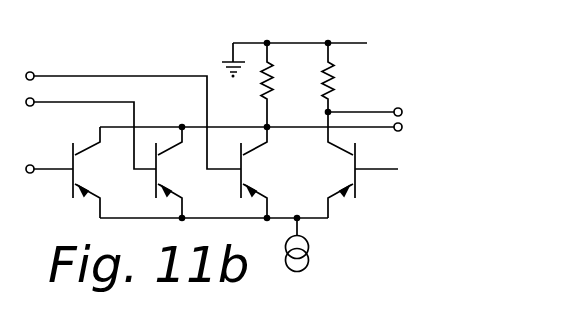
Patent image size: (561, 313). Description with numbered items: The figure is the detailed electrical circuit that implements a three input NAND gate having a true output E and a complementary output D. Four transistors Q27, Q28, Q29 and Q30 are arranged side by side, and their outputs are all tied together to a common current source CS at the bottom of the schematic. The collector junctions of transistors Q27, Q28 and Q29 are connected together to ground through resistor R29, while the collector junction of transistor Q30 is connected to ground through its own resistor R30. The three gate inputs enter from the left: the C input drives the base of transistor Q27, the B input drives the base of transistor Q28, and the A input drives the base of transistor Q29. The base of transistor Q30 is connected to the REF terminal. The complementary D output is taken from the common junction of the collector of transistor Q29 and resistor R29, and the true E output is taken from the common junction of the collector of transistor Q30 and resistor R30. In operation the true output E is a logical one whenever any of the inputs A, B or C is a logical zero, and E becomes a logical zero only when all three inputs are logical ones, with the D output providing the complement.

The transistor Q27 is at (92, 172).
The transistor Q28 is at (175, 172).
The transistor Q29 is at (260, 172).
The transistor Q30 is at (334, 172).
The resistor R29 is at (283, 85).
The resistor R30 is at (345, 85).
The current source CS is at (314, 245).
The input A is at (125, 118).
The input B is at (83, 131).
The input C is at (41, 170).
The complementary output D is at (405, 128).
The true output E is at (370, 113).
The reference voltage terminal REF is at (394, 170).